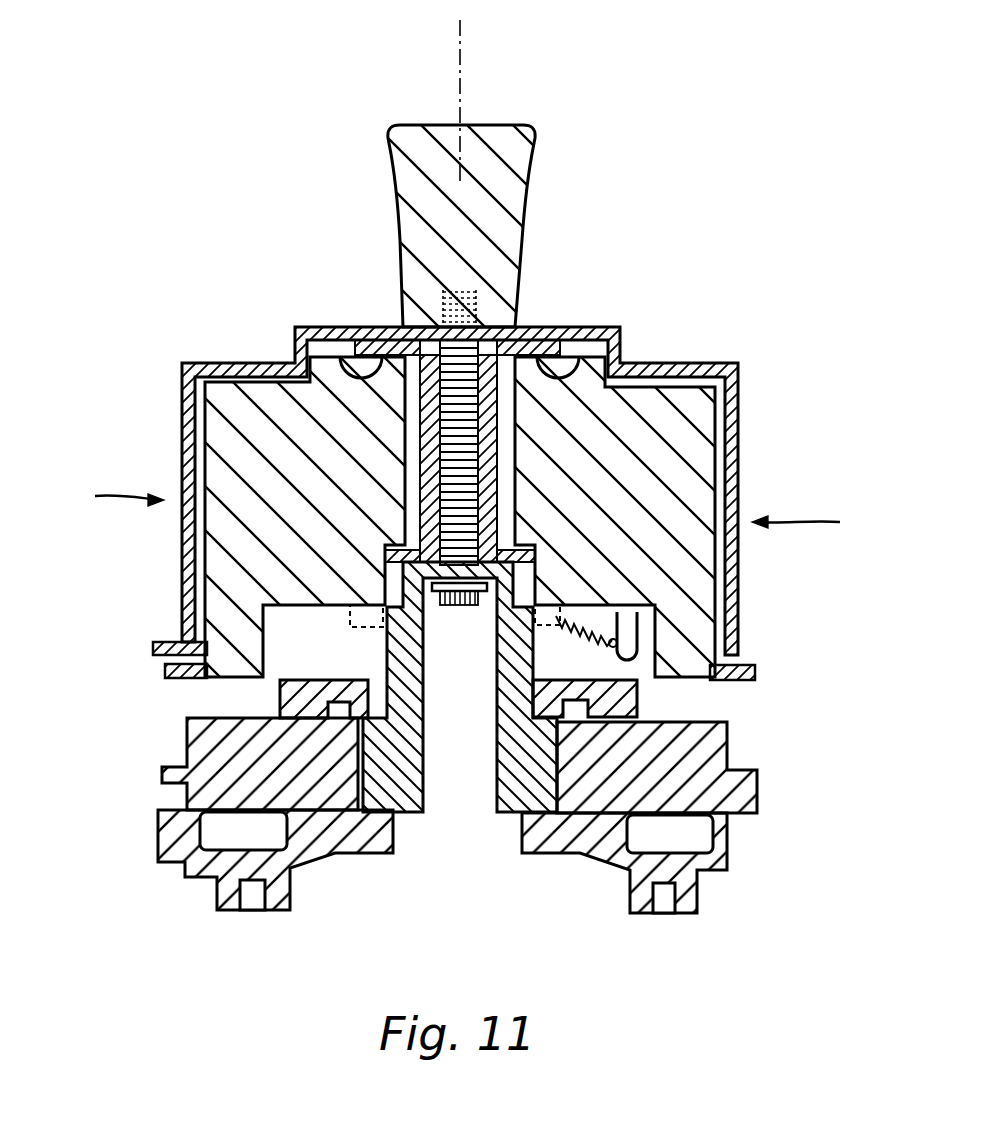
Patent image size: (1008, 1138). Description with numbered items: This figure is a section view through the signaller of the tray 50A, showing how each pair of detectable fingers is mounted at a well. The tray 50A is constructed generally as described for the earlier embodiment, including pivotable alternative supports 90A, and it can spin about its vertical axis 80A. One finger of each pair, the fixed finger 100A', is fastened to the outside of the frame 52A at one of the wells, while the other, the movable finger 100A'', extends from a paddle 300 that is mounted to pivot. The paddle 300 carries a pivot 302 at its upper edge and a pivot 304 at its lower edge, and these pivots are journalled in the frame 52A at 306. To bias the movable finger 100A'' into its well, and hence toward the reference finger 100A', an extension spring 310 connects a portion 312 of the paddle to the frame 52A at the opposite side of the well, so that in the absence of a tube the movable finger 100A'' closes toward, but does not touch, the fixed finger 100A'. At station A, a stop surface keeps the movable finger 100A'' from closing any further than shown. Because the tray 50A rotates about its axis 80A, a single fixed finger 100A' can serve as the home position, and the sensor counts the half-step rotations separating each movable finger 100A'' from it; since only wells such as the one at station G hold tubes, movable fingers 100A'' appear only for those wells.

The vertical axis 80A is at (463, 98).
The tray 50A is at (500, 463).
The frame 52A is at (738, 478).
The paddle 300 is at (313, 547).
The pivot 302 is at (342, 362).
The pivot 304 is at (360, 603).
The journal location in frame 306 is at (385, 330).
The extension spring 310 is at (600, 630).
The portion of paddle 312 is at (615, 636).
The fixed finger 100A' is at (126, 622).
The movable finger 100A'' is at (463, 695).
The pivotable alternative support 90A is at (712, 750).
The station A is at (114, 495).
The station G is at (811, 523).